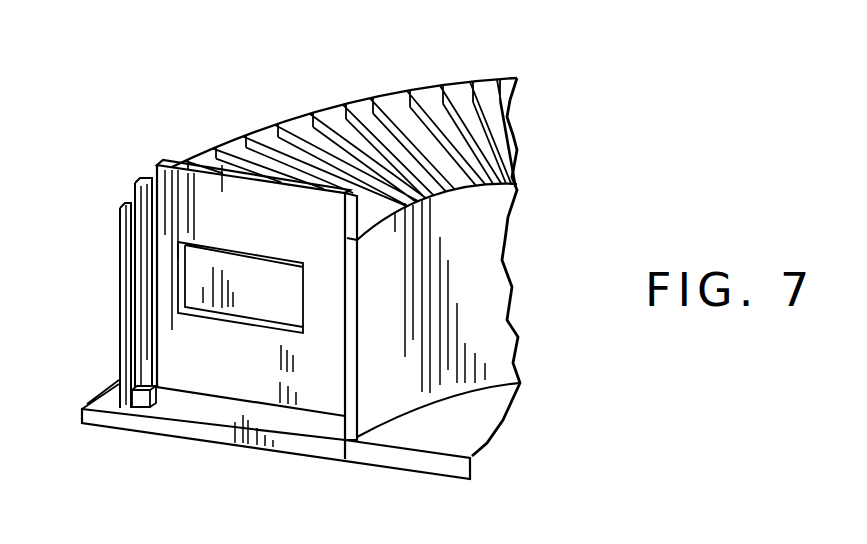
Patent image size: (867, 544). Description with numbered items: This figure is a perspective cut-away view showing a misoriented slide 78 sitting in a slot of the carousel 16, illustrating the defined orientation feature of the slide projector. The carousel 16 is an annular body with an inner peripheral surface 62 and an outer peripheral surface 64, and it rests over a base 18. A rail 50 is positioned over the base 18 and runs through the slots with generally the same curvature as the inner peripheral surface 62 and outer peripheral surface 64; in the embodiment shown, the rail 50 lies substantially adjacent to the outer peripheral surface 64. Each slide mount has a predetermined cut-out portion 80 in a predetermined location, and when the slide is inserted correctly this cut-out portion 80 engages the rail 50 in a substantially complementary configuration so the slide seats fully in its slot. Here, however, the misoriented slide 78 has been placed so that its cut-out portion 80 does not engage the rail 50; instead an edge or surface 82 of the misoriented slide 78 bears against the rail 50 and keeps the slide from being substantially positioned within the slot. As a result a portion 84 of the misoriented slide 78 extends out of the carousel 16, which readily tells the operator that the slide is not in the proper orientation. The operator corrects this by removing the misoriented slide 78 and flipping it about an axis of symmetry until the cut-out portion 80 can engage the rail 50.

The carousel 16 is at (447, 86).
The base 18 is at (107, 396).
The rail 50 is at (145, 412).
The inner peripheral surface 62 is at (477, 295).
The outer peripheral surface 64 is at (123, 258).
The misoriented slide 78 is at (318, 395).
The cut-out portion 80 is at (148, 182).
The edge or surface 82 is at (198, 392).
The portion 84 is at (222, 188).